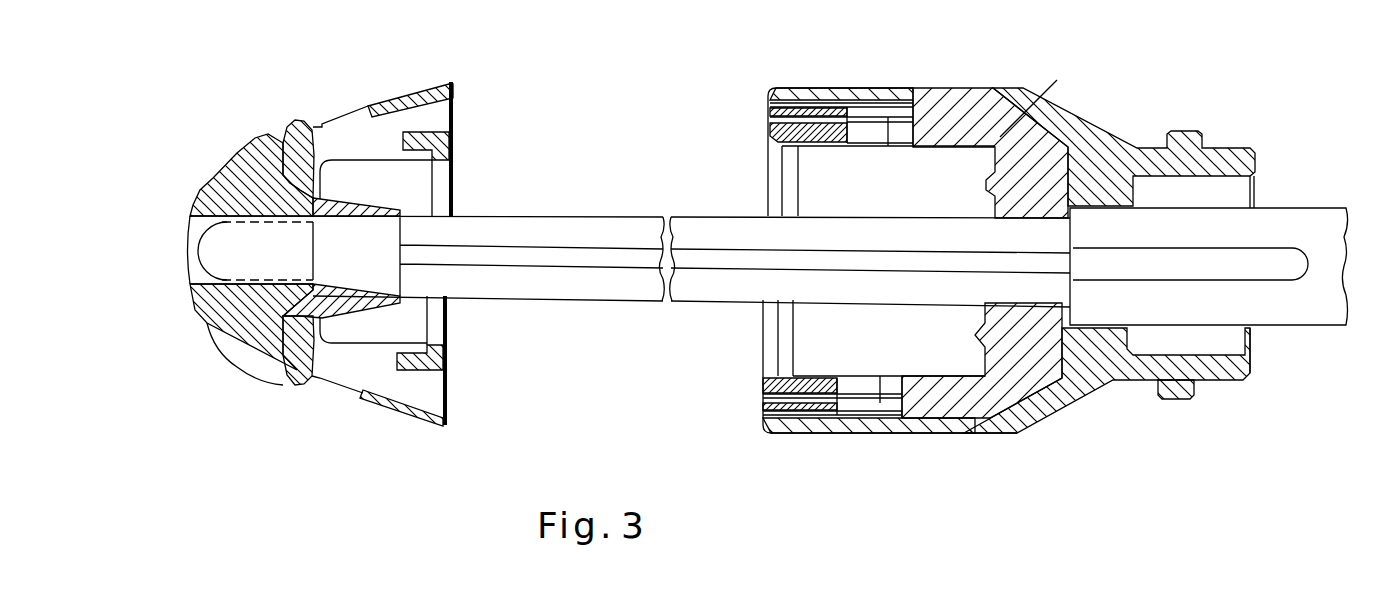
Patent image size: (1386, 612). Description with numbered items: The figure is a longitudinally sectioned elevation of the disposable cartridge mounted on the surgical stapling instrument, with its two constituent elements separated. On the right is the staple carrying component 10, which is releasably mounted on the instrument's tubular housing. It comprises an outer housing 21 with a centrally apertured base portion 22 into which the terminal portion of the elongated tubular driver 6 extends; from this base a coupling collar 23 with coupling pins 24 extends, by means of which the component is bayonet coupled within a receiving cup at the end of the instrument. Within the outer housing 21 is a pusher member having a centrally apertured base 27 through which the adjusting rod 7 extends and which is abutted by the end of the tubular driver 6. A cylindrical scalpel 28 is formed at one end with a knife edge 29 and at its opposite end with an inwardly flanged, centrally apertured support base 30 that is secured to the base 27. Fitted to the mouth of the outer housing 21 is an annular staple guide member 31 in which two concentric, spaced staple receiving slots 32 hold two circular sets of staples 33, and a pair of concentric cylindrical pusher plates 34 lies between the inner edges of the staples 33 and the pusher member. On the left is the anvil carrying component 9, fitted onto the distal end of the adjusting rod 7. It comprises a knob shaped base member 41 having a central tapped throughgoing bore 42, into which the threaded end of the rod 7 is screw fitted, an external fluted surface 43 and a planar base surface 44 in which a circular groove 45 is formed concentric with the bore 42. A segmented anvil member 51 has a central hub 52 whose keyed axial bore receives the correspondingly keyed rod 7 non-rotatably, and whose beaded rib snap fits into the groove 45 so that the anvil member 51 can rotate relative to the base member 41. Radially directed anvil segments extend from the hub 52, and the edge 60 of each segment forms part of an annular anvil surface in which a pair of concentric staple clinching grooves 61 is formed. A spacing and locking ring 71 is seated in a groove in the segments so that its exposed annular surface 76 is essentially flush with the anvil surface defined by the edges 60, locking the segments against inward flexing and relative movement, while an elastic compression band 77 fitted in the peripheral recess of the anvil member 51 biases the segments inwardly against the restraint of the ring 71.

The tubular driver 6 is at (1285, 208).
The adjusting rod 7 is at (555, 215).
The anvil carrying component 9 is at (341, 102).
The staple carrying component 10 is at (940, 66).
The outer housing 21 is at (977, 88).
The base portion 22 is at (1115, 152).
The coupling collar 23 is at (1225, 148).
The coupling pins 24 is at (1183, 133).
The base of pusher member 27 is at (1078, 125).
The cylindrical scalpel 28 is at (888, 130).
The knife edge 29 is at (790, 150).
The support base 30 is at (992, 170).
The annular staple guide member 31 is at (783, 425).
The staple receiving slots 32 is at (770, 383).
The staples 33 is at (768, 428).
The pusher plates 34 is at (850, 108).
The base member 41 is at (250, 330).
The tapped throughgoing bore 42 is at (188, 245).
The external fluted surface 43 is at (245, 150).
The planar base surface 44 is at (310, 378).
The circular groove 45 is at (283, 135).
The segmented anvil member 51 is at (400, 178).
The central hub 52 is at (390, 205).
The segment edge 60 is at (446, 385).
The staple clinching grooves 61 is at (455, 91).
The spacing and locking ring 71 is at (462, 148).
The exposed annular surface 76 is at (445, 358).
The elastic compression band 77 is at (400, 416).